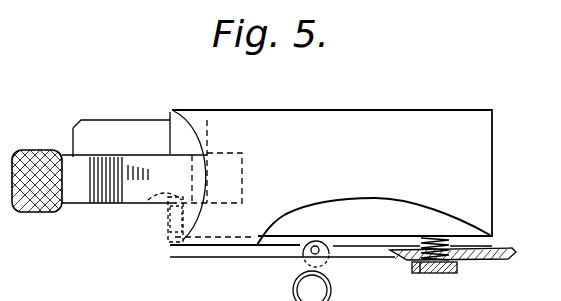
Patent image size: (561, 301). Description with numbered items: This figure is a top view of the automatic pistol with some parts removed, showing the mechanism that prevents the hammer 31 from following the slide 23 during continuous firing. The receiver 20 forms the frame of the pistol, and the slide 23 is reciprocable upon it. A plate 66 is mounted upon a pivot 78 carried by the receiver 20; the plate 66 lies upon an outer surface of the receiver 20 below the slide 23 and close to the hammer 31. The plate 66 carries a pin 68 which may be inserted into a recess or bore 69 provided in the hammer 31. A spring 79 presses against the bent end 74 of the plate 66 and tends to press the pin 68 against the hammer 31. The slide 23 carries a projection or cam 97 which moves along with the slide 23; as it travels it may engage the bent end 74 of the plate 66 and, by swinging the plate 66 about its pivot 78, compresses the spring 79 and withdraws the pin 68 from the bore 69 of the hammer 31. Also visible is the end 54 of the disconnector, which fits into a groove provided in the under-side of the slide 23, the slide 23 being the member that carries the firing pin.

The receiver 20 is at (144, 133).
The slide 23 is at (298, 118).
The hammer 31 is at (73, 157).
The end of the disconnector 54 is at (296, 293).
The plate 66 is at (194, 258).
The pin 68 is at (180, 238).
The recess or bore 69 is at (164, 195).
The bent end 74 is at (422, 274).
The pivot 78 is at (312, 245).
The spring 79 is at (440, 236).
The projection or cam 97 is at (454, 270).